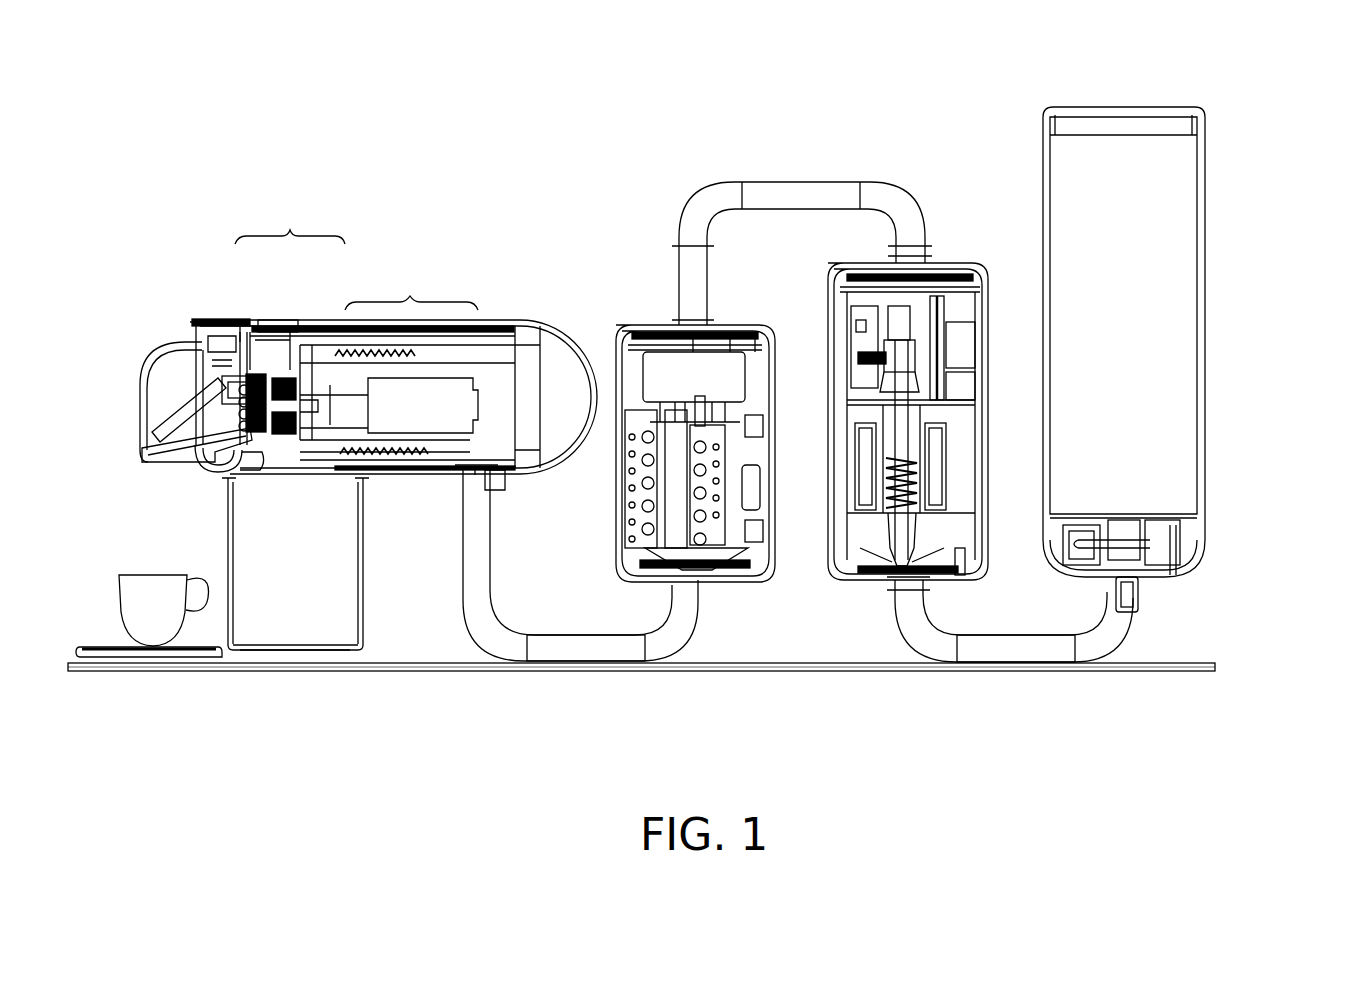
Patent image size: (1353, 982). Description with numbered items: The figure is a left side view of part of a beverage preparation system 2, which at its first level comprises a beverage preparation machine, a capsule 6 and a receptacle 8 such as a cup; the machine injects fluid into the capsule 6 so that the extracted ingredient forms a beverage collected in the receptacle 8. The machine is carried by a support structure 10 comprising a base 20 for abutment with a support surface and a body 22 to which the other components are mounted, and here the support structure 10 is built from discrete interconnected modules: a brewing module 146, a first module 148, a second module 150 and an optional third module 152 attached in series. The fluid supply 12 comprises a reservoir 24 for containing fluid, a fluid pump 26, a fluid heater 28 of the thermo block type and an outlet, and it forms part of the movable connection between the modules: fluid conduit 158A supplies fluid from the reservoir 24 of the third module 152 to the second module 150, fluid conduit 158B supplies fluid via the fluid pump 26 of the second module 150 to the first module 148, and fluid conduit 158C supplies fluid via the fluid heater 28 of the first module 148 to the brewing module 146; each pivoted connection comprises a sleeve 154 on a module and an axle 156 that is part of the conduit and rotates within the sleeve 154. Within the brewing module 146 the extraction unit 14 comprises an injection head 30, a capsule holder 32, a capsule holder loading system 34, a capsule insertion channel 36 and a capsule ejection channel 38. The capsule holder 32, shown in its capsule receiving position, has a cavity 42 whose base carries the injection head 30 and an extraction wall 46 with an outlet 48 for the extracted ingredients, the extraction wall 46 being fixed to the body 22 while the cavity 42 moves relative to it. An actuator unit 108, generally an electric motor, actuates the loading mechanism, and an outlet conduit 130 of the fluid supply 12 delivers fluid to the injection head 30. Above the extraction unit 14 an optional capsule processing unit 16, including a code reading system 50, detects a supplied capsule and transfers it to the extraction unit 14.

The beverage preparation system 2 is at (1193, 42).
The capsule 6 is at (300, 440).
The receptacle 8 is at (160, 616).
The support structure 10 is at (1280, 100).
The fluid supply 12 is at (1183, 742).
The extraction unit 14 is at (105, 345).
The capsule processing unit 16 is at (105, 318).
The base 20 is at (360, 664).
The body 22 is at (567, 320).
The reservoir 24 is at (1140, 344).
The fluid pump 26 is at (855, 518).
The fluid heater 28 is at (610, 520).
The injection head 30 is at (306, 340).
The capsule holder 32 is at (290, 288).
The capsule holder loading system 34 is at (395, 375).
The capsule insertion channel 36 is at (270, 316).
The capsule ejection channel 38 is at (265, 482).
The cavity 42 is at (322, 445).
The extraction wall 46 is at (240, 368).
The outlet 48 is at (155, 482).
The code reading system 50 is at (250, 325).
The actuator unit 108 is at (428, 422).
The outlet conduit 130 is at (420, 460).
The brewing module 146 is at (443, 225).
The first module 148 is at (612, 256).
The second module 150 is at (832, 244).
The third module 152 is at (1015, 112).
The sleeve 154 is at (508, 494).
The axle 156 is at (1152, 597).
The fluid conduit 158A is at (1058, 648).
The fluid conduit 158B is at (850, 190).
The fluid conduit 158C is at (620, 642).